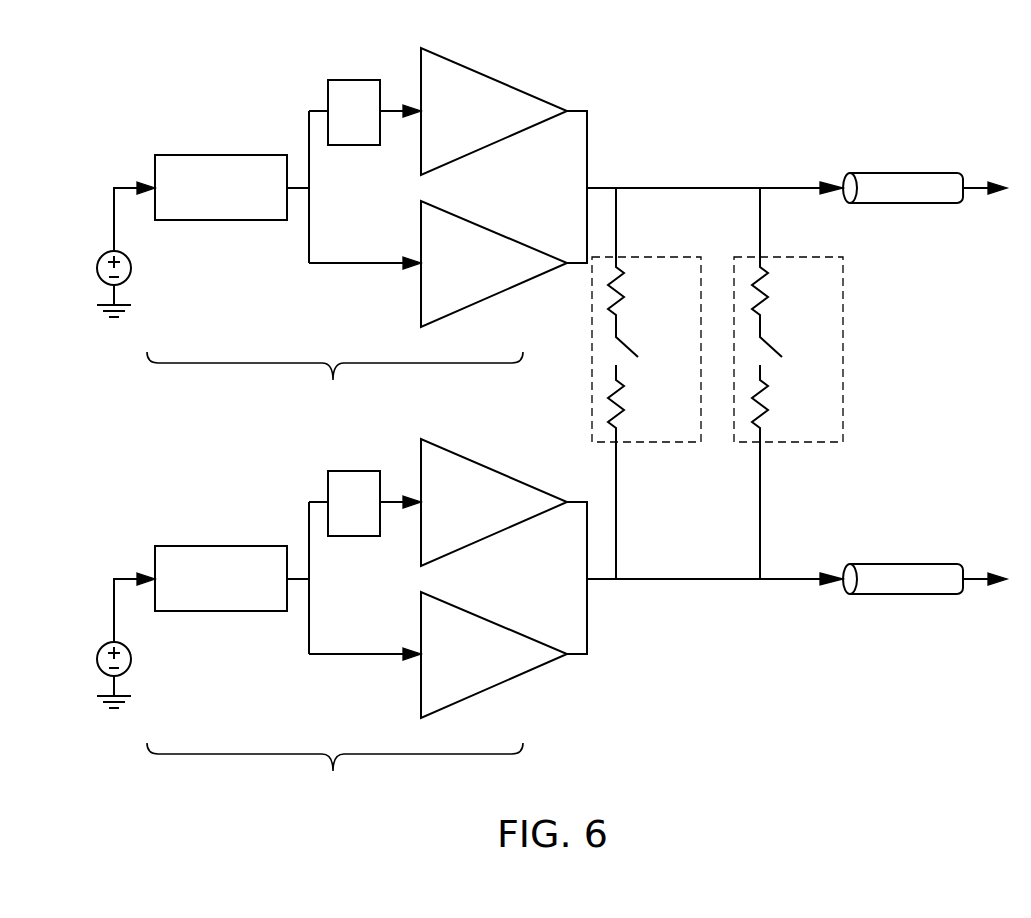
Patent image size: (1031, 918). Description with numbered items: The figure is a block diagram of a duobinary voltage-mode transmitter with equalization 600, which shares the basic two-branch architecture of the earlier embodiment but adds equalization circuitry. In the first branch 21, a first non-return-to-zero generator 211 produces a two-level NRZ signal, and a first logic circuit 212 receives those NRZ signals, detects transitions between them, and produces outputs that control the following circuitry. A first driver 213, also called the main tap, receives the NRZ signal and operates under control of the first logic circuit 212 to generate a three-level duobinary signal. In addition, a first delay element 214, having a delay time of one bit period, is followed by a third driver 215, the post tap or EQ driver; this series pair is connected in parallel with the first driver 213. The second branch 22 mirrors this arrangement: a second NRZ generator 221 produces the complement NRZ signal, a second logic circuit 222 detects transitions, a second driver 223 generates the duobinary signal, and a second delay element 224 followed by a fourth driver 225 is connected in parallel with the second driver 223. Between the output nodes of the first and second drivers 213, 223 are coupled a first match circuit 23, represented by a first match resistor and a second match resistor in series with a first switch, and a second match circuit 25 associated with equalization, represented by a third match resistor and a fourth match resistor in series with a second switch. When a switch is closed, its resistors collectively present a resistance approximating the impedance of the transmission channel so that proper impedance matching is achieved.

The duobinary voltage-mode transmitter with equalization 600 is at (96, 48).
The first branch 21 is at (335, 380).
The first non-return-to-zero (NRZ) generator 211 is at (128, 259).
The first logic circuit 212 is at (231, 220).
The first driver 213 is at (488, 300).
The first delay element 214 is at (353, 80).
The third driver 215 is at (488, 146).
The second branch 22 is at (335, 771).
The second non-return-to-zero (NRZ) generator 221 is at (143, 640).
The second logic circuit 222 is at (232, 602).
The second driver 223 is at (494, 662).
The second delay element 224 is at (374, 482).
The fourth driver 225 is at (494, 509).
The first match circuit 23 is at (787, 442).
The second match circuit 25 is at (645, 442).